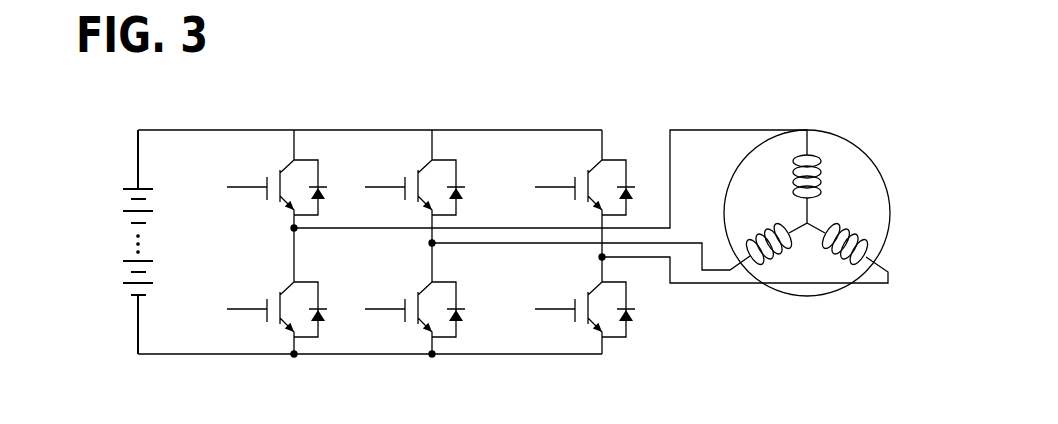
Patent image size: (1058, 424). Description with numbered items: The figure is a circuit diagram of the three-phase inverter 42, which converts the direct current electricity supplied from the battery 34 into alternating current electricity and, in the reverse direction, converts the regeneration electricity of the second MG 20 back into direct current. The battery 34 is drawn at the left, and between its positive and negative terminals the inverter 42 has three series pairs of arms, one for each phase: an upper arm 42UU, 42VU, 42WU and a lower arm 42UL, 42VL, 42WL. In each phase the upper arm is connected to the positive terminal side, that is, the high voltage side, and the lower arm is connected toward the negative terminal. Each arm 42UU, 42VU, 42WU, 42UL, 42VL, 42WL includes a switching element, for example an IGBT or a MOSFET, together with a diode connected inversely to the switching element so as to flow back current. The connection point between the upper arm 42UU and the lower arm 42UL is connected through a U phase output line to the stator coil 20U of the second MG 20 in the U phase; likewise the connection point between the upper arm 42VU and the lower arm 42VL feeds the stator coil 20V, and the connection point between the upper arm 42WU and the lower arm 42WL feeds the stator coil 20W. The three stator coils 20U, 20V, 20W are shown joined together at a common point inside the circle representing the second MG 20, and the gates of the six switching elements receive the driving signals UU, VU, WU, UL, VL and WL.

The second MG 20 is at (857, 151).
The stator coil in the U phase 20U is at (821, 164).
The stator coil in the V phase 20V is at (781, 264).
The stator coil in the W phase 20W is at (838, 264).
The battery 34 is at (135, 184).
The three-phase inverter 42 is at (610, 115).
The upper arm in the U phase 42UU is at (265, 152).
The upper arm in the V phase 42VU is at (403, 152).
The upper arm in the W phase 42WU is at (565, 152).
The lower arm in the U phase 42UL is at (281, 338).
The lower arm in the V phase 42VL is at (419, 338).
The lower arm in the W phase 42WL is at (589, 338).